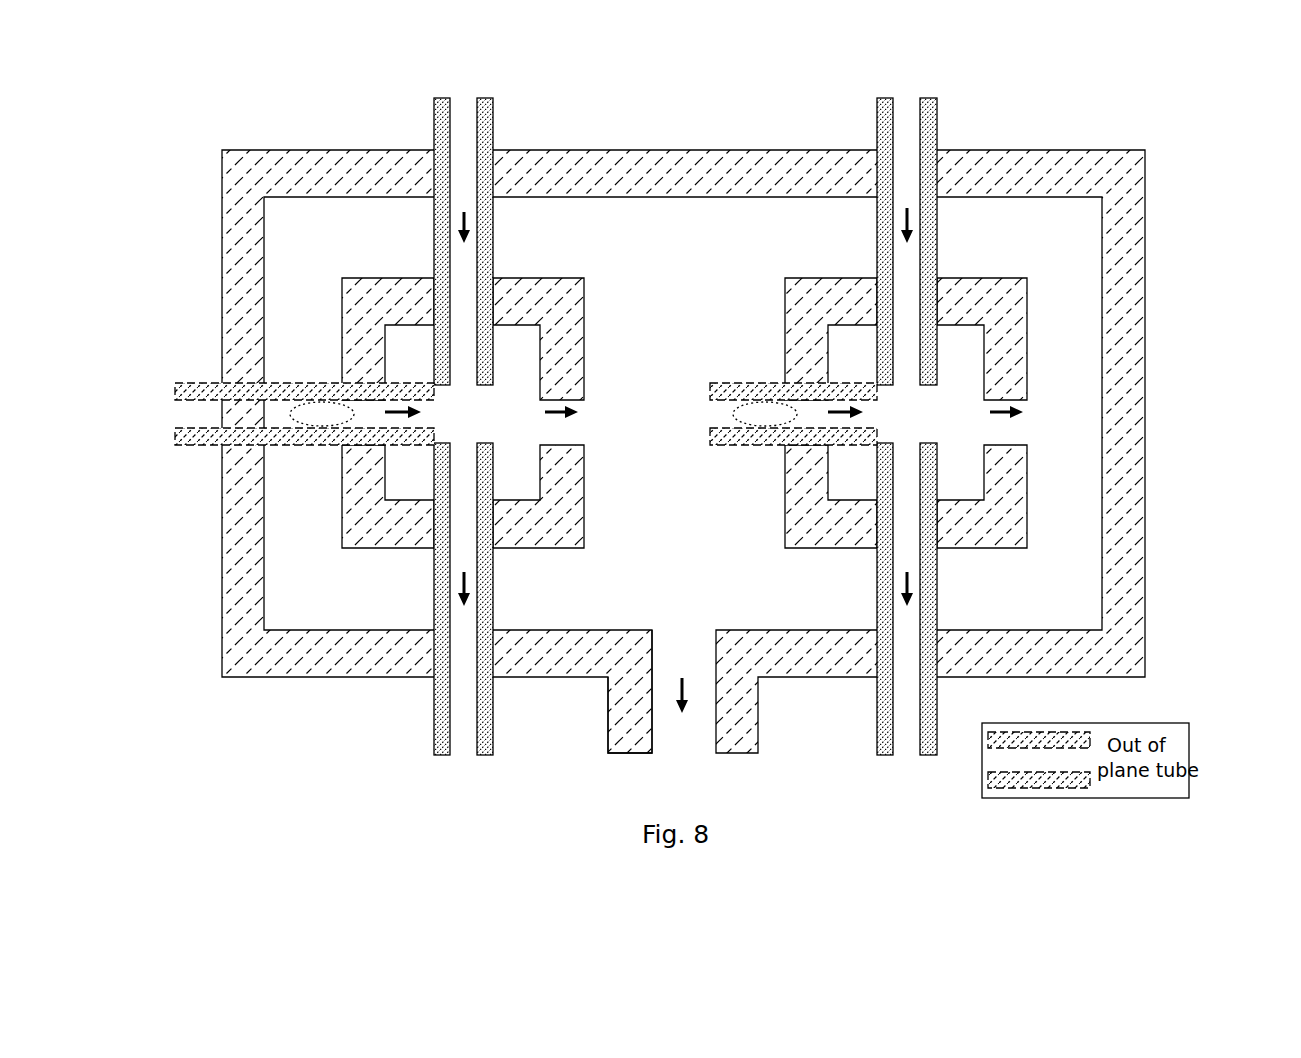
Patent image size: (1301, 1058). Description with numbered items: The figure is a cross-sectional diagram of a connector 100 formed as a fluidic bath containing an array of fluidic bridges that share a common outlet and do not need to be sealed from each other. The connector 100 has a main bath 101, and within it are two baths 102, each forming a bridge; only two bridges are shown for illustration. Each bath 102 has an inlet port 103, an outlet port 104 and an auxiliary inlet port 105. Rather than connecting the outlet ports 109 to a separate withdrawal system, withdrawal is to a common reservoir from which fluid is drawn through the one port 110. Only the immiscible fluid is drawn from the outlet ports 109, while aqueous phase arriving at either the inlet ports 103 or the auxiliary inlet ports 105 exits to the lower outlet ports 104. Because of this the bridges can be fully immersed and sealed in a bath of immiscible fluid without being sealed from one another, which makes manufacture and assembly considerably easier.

The connector 100 is at (755, 405).
The main bath 101 is at (1150, 267).
The bath 102 is at (375, 268).
The inlet port 103 is at (494, 116).
The outlet port 104 is at (433, 715).
The auxiliary inlet port 105 is at (760, 383).
The outlet port 109 is at (588, 408).
The port 110 is at (622, 770).